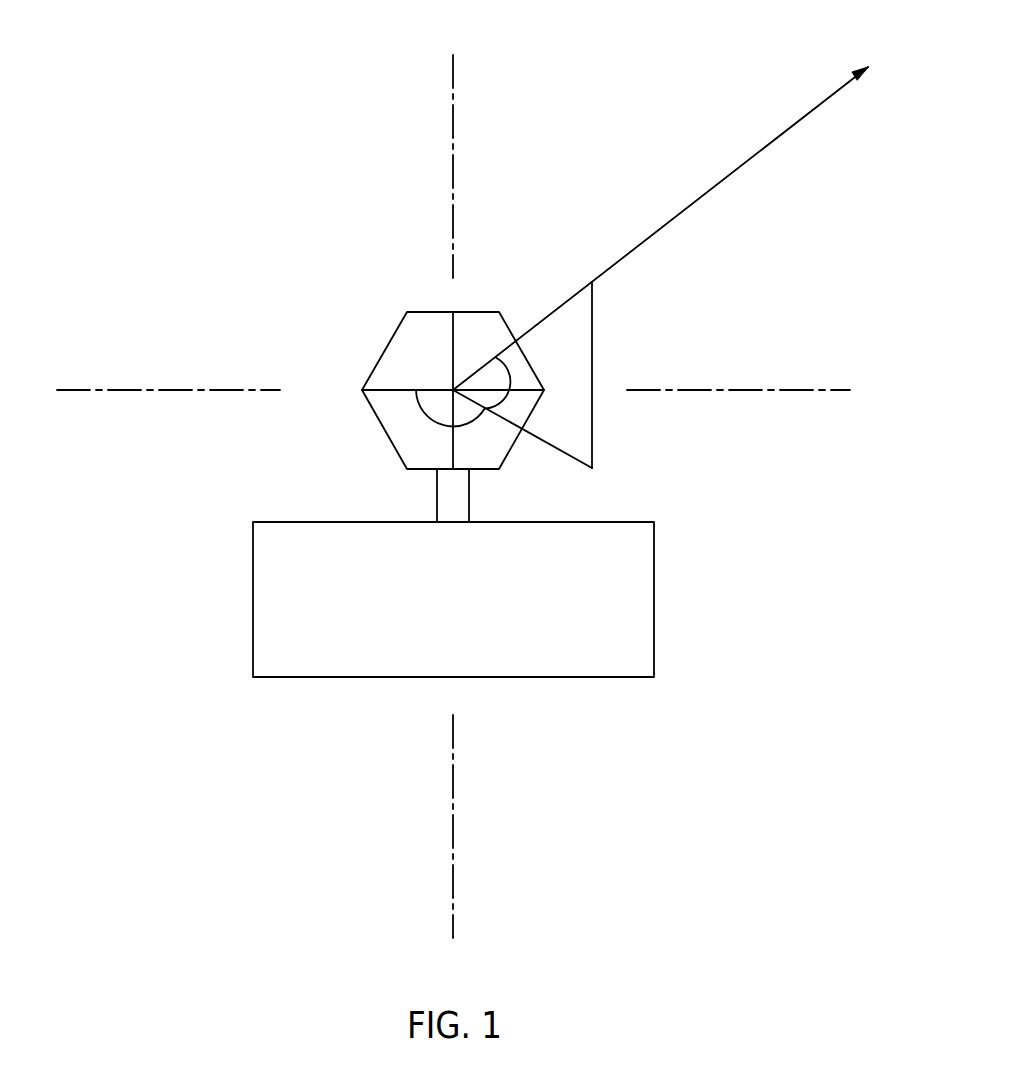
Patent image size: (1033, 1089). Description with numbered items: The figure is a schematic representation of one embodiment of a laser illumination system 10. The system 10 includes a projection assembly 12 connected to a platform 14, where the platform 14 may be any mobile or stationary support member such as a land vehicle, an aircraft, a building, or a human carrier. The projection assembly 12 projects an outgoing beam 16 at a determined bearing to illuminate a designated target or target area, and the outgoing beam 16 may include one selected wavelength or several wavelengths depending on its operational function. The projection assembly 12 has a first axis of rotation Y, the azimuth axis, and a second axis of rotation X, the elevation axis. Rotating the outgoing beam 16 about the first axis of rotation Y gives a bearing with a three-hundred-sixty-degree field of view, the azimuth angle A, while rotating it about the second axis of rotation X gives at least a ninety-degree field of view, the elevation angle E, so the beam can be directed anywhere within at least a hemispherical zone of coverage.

The laser illumination system 10 is at (192, 98).
The projection assembly 12 is at (391, 339).
The platform 14 is at (654, 605).
The outgoing beam 16 is at (717, 185).
The azimuth angle A is at (420, 408).
The elevation angle E is at (512, 375).
The second axis of rotation X is at (463, 392).
The first axis of rotation Y is at (451, 480).